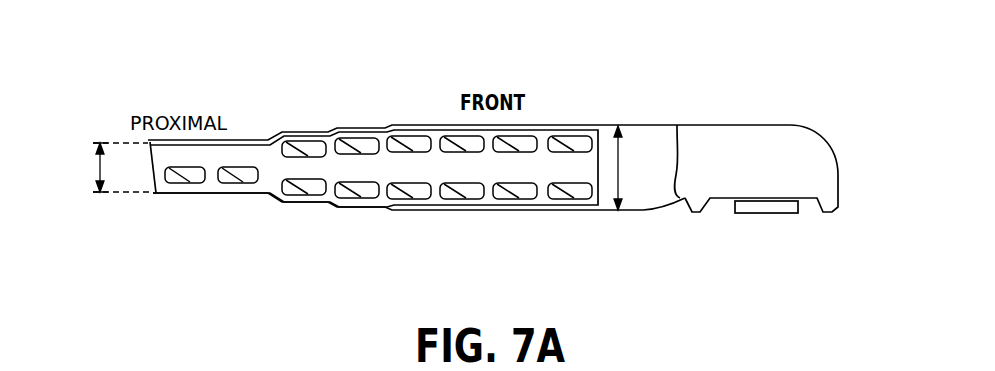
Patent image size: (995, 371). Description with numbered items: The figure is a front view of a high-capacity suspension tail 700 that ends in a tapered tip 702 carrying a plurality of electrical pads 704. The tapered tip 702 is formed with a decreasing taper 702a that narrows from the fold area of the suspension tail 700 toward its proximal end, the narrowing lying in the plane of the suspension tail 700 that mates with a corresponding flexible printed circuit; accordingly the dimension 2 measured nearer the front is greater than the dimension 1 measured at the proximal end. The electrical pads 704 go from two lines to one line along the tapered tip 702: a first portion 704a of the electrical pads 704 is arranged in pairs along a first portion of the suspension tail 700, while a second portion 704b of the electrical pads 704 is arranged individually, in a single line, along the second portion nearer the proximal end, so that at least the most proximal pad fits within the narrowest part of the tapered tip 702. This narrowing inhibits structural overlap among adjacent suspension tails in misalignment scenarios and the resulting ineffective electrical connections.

The suspension tail 700 is at (212, 84).
The tapered tip 702 is at (365, 128).
The decreasing taper 702a is at (158, 194).
The electrical pads 704 is at (680, 165).
The first portion of the electrical pads 704a is at (288, 130).
The second portion of the electrical pads 704b is at (165, 200).
The dimension 1 is at (99, 169).
The dimension 2 is at (620, 167).